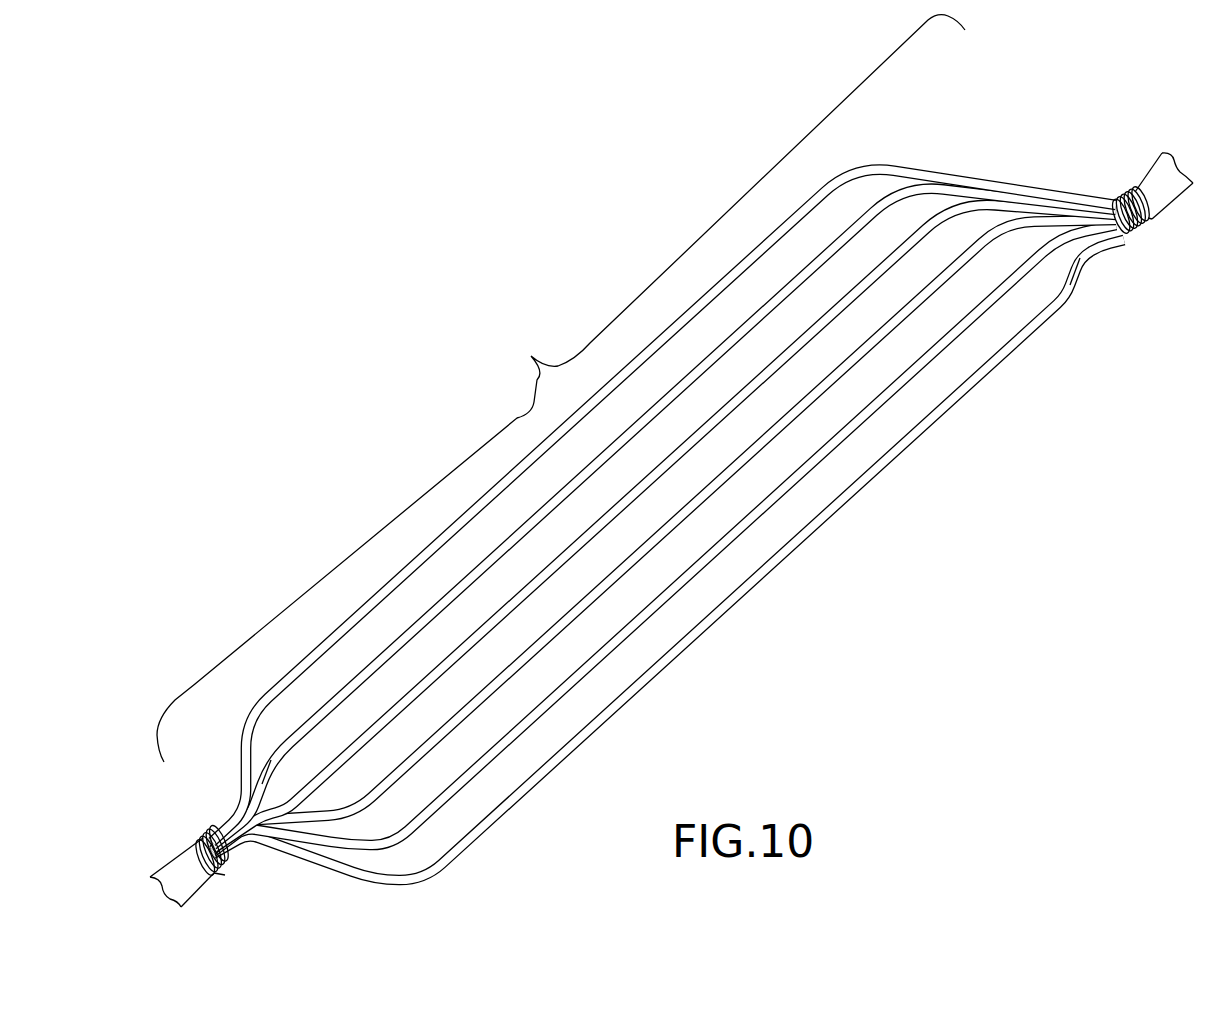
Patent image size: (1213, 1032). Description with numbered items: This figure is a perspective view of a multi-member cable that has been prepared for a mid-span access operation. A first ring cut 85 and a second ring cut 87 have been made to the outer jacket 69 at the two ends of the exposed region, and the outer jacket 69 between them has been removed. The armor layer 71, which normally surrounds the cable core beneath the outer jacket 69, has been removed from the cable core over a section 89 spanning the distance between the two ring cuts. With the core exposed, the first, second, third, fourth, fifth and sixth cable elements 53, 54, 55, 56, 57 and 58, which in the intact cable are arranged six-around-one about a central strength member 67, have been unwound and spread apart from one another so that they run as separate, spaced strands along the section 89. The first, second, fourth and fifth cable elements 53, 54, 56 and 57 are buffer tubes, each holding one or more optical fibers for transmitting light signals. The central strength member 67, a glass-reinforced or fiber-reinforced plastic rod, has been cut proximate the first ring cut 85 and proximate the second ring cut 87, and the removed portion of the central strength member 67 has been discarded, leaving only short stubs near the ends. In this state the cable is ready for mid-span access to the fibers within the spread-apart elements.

The first cable element 53 is at (546, 779).
The second cable element 54 is at (520, 737).
The third cable element 55 is at (487, 702).
The fourth cable element 56 is at (454, 667).
The fifth cable element 57 is at (421, 632).
The sixth cable element 58 is at (375, 607).
The central strength member 67 is at (270, 782).
The outer jacket 69 is at (183, 872).
The armor layer 71 is at (228, 866).
The first ring cut 85 is at (1148, 218).
The second ring cut 87 is at (225, 875).
The section 89 is at (561, 388).